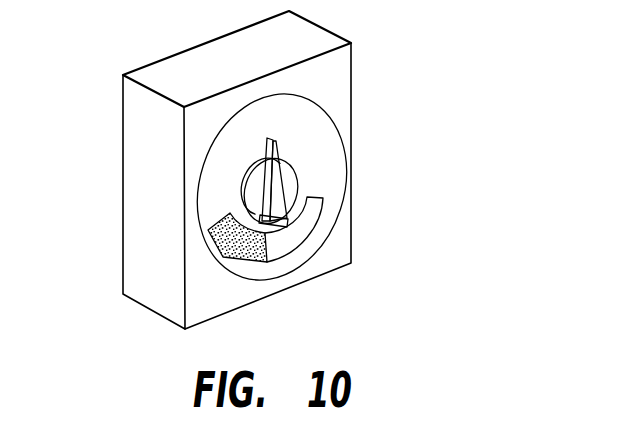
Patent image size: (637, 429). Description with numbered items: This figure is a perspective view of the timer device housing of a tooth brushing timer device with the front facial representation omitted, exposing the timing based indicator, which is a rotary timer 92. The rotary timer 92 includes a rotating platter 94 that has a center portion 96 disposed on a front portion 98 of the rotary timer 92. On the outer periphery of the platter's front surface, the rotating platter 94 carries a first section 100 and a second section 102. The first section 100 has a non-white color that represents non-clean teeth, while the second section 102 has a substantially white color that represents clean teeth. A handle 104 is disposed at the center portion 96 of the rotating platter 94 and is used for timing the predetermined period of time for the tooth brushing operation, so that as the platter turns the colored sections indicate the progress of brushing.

The rotary timer 92 is at (392, 200).
The rotating platter 94 is at (302, 112).
The center portion 96 is at (292, 200).
The front portion 98 is at (194, 114).
The first section 100 is at (240, 260).
The second section 102 is at (297, 222).
The handle 104 is at (272, 182).